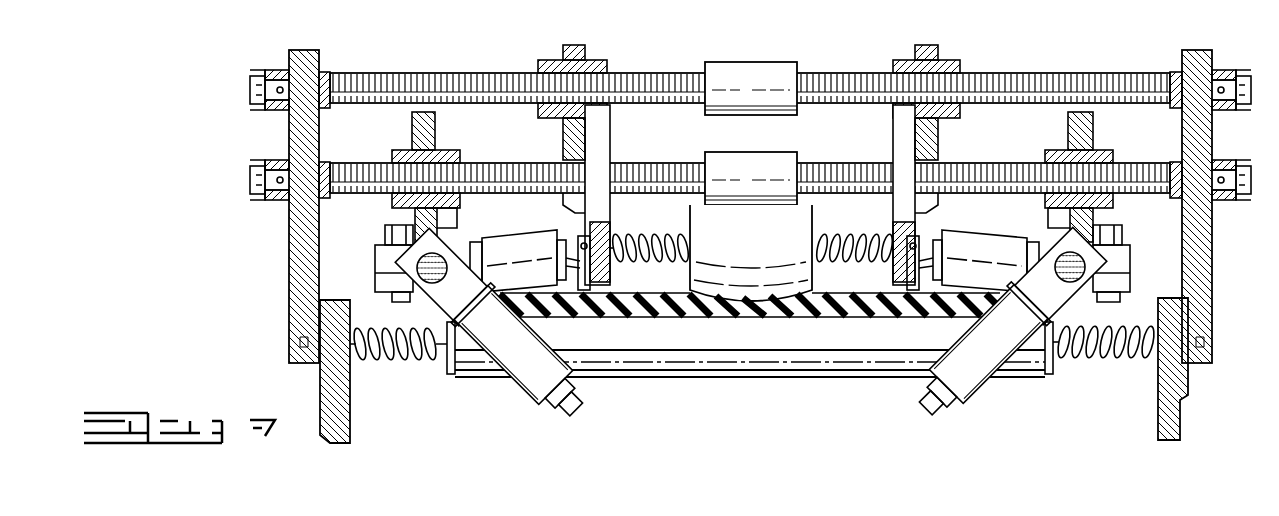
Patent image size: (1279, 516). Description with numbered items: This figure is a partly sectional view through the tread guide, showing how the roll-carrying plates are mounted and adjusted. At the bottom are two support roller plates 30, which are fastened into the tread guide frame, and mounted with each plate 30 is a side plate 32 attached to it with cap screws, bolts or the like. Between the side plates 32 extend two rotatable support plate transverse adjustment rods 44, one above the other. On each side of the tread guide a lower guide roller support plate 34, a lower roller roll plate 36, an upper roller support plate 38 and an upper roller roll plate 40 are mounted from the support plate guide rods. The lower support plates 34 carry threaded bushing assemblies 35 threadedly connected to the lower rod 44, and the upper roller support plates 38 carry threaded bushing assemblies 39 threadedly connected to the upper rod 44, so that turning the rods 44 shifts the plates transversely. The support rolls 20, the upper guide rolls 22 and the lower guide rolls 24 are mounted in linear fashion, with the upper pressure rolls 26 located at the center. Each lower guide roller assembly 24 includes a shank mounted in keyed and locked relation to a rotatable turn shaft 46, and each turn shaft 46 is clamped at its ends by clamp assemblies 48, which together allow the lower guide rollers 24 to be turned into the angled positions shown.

The support rolls 20 is at (767, 375).
The upper guide rolls 22 is at (515, 236).
The lower guide rollers 24 is at (522, 382).
The upper pressure rolls 26 is at (766, 259).
The support roller plate 30 is at (1158, 410).
The side plate 32 is at (292, 263).
The lower guide roller support plate 34 is at (435, 132).
The threaded bushing assembly 35 is at (446, 153).
The lower roller roll plate 36 is at (438, 226).
The upper roller support plate 38 is at (580, 52).
The threaded bushing assembly 39 is at (608, 70).
The upper roller roll plate 40 is at (600, 142).
The support plate transverse adjustment rod 44 is at (446, 85).
The turn shaft 46 is at (442, 292).
The clamp assembly 48 is at (378, 257).